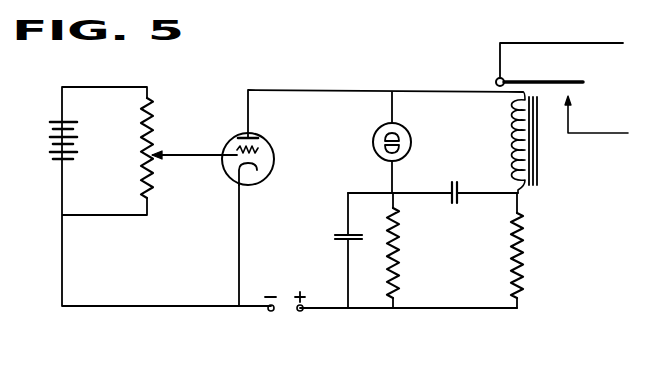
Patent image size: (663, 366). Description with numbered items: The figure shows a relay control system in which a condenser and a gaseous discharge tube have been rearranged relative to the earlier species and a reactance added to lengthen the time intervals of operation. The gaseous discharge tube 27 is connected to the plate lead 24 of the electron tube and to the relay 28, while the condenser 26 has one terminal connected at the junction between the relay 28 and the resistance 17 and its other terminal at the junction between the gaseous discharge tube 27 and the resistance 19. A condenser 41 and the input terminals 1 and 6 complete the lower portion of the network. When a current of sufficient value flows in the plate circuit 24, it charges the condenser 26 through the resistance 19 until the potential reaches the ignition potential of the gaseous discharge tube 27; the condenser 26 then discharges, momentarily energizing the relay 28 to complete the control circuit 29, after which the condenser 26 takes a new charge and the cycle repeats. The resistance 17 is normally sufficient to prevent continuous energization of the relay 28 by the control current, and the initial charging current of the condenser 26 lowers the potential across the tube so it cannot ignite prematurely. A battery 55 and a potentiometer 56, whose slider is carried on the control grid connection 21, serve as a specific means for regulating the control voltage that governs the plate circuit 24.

The negative input terminal 1 is at (267, 314).
The positive input terminal 6 is at (300, 311).
The resistance 17 is at (512, 256).
The resistance 19 is at (400, 260).
The control grid connection 21 is at (209, 153).
The plate lead 24 is at (250, 116).
The condenser 26 is at (459, 191).
The gaseous discharge tube 27 is at (415, 143).
The relay 28 is at (540, 163).
The control circuit 29 is at (617, 133).
The capacitor 41 is at (338, 215).
The battery 55 is at (77, 122).
The potentiometer 56 is at (138, 186).